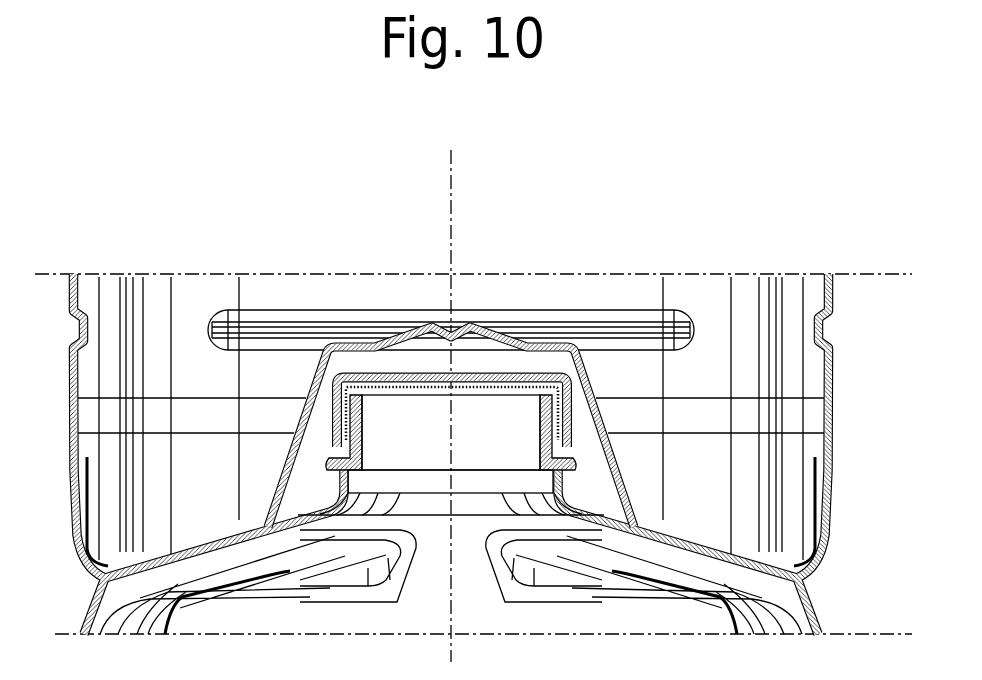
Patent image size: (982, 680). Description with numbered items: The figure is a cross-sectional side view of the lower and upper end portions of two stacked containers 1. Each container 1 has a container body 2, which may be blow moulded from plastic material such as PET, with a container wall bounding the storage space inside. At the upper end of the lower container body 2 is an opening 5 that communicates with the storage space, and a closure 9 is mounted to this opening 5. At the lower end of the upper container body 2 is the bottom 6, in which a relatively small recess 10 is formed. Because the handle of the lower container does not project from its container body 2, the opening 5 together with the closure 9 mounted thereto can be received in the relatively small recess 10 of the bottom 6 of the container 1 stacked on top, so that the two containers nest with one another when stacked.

The container 1 is at (858, 349).
The container body 2 is at (842, 306).
The opening 5 is at (490, 434).
The bottom 6 is at (513, 353).
The closure 9 is at (395, 375).
The recess 10 is at (313, 443).